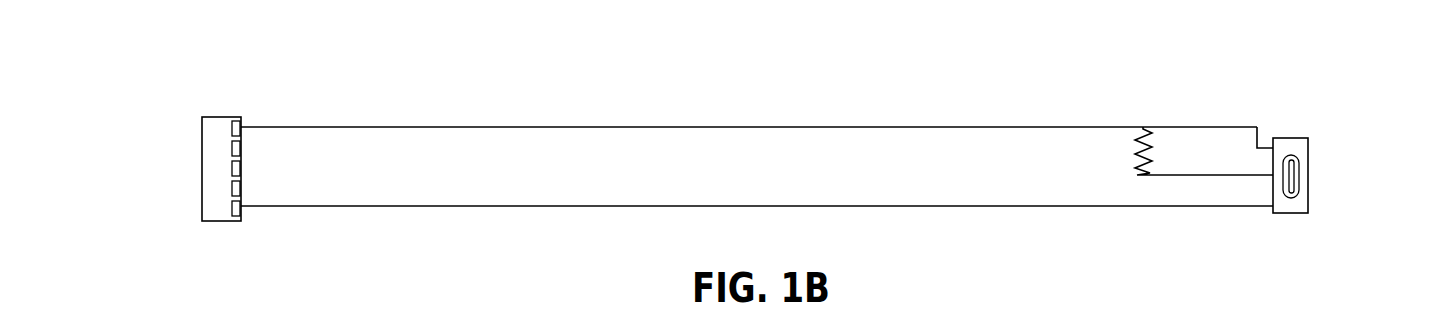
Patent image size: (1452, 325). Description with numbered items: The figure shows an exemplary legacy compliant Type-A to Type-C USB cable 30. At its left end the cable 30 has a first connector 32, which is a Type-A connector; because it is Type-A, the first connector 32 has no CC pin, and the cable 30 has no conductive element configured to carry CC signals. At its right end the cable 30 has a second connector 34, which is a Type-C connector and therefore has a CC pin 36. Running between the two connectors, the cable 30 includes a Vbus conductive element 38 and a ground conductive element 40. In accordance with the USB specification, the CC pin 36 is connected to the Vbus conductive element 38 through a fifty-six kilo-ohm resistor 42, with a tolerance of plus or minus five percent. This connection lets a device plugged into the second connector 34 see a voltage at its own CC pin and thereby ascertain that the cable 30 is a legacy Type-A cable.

The legacy compliant Type-A to Type-C USB cable 30 is at (1068, 110).
The first connector 32 is at (218, 117).
The second connector 34 is at (1292, 138).
The CC pin 36 is at (1266, 148).
The Vbus conductive element 38 is at (1143, 127).
The ground conductive element 40 is at (1160, 206).
The resistor 42 is at (1138, 164).